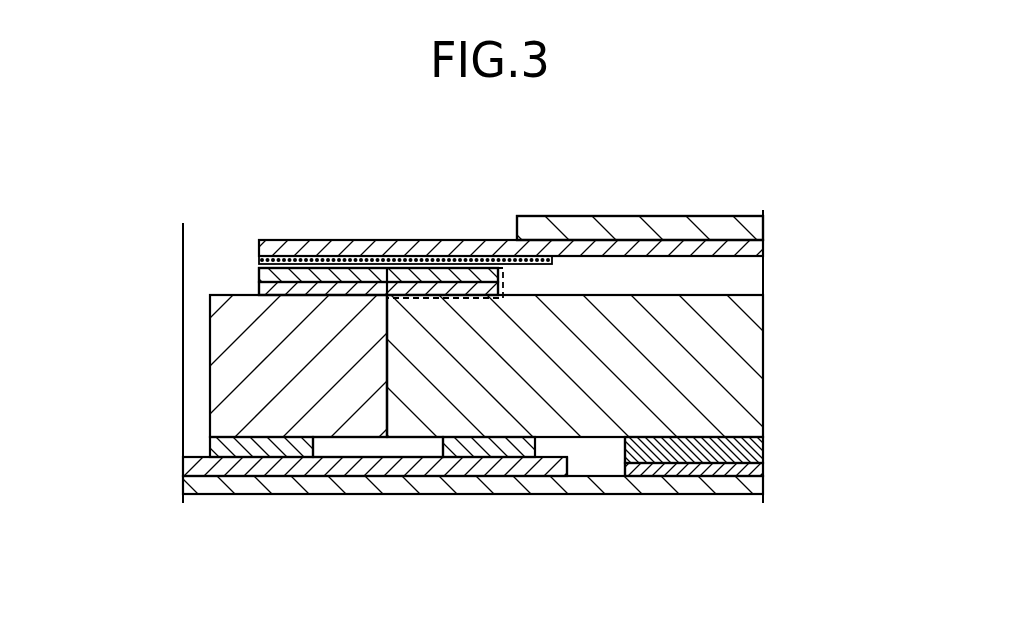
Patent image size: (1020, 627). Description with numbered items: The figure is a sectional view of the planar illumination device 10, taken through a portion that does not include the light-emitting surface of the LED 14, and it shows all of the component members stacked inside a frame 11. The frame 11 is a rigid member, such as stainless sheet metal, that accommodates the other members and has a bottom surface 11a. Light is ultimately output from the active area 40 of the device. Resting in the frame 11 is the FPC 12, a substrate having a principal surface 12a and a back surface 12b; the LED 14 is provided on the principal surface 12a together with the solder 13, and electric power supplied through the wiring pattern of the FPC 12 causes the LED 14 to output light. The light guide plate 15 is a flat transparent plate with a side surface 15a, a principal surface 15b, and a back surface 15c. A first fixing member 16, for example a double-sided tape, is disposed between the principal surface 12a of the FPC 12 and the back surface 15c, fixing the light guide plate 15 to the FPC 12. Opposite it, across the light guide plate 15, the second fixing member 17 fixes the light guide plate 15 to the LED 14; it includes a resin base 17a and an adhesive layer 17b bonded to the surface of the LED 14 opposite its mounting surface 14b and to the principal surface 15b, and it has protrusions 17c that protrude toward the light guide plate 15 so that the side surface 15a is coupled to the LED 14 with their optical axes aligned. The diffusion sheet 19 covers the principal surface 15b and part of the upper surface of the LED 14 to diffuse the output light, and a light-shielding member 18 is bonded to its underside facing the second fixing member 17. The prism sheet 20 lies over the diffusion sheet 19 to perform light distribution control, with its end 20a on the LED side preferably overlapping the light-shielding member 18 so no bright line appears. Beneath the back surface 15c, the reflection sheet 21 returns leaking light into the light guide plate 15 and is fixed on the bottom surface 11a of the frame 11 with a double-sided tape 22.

The planar illumination device 10 is at (591, 143).
The active area 40 is at (691, 200).
The prism sheet 20 is at (732, 228).
The end of the prism sheet 20a is at (535, 230).
The diffusion sheet 19 is at (730, 250).
The light-shielding member 18 is at (490, 258).
The second fixing member 17 is at (122, 212).
The base 17a is at (259, 271).
The adhesive layer 17b is at (259, 288).
The protrusion 17c is at (413, 258).
The LED 14 is at (277, 356).
The mounting surface 14b is at (257, 452).
The light guide plate 15 is at (705, 368).
The side surface 15a is at (387, 311).
The principal surface 15b is at (680, 293).
The back surface 15c is at (623, 450).
The solder 13 is at (265, 450).
The FPC 12 is at (389, 468).
The principal surface 12a is at (330, 452).
The back surface 12b is at (437, 493).
The first fixing member 16 is at (507, 455).
The frame 11 is at (653, 487).
The bottom surface 11a is at (588, 476).
The reflection sheet 21 is at (733, 455).
The double-sided tape 22 is at (748, 474).